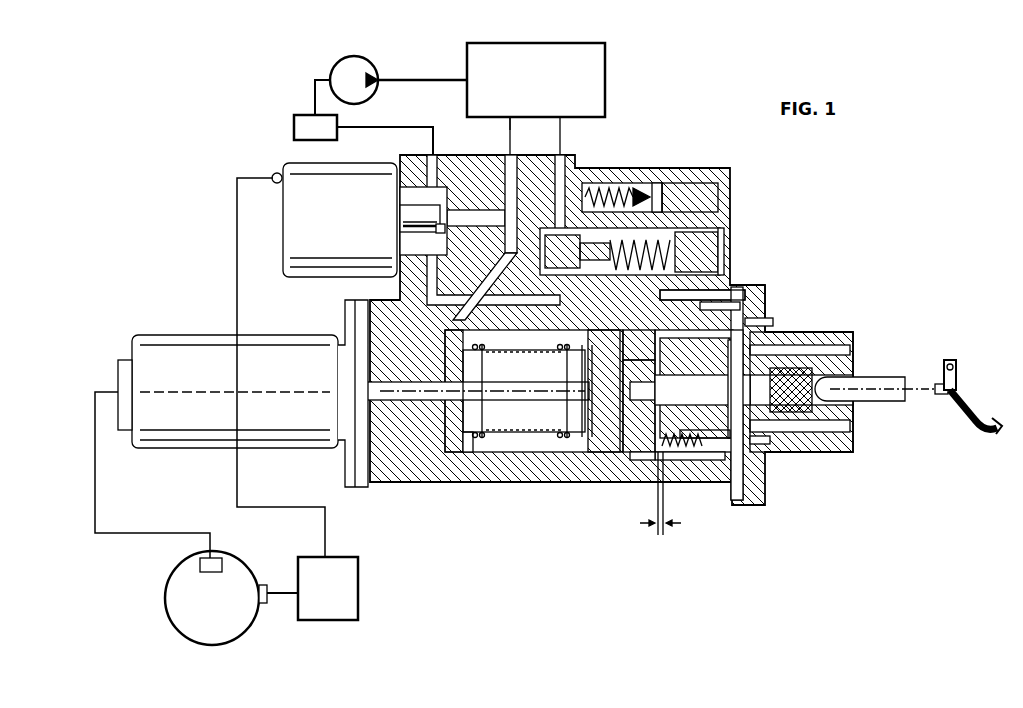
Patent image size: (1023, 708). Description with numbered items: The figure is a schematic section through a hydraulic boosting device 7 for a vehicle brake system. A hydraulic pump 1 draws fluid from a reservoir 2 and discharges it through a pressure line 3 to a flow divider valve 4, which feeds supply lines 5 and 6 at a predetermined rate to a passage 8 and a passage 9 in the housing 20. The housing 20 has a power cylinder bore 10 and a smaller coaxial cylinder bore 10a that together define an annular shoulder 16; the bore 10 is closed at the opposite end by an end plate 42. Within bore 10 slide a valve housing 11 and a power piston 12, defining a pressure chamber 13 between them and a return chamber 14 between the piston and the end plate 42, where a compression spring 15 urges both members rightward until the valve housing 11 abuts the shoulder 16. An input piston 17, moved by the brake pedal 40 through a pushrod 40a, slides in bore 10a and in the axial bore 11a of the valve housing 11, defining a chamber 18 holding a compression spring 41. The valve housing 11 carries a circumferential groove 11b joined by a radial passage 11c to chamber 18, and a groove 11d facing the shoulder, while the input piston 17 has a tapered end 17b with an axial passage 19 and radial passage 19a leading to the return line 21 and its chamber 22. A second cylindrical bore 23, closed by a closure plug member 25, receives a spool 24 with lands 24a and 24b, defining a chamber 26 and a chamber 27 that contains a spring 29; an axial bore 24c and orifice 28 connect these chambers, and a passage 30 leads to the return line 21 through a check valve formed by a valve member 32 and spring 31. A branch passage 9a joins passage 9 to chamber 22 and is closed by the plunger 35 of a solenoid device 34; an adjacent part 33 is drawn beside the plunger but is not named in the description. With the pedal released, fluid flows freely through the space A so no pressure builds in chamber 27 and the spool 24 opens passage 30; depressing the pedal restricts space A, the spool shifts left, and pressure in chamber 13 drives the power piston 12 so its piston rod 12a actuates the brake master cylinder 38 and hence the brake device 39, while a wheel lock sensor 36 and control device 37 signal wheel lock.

The hydraulic pump 1 is at (354, 57).
The reservoir 2 is at (303, 115).
The pressure line 3 is at (430, 79).
The flow divider valve 4 is at (541, 43).
The supply line 5 is at (562, 134).
The supply line 6 is at (512, 134).
The hydraulic boosting device 7 is at (768, 296).
The passage 8 is at (588, 167).
The passage 9 is at (507, 160).
The branch passage 9a is at (478, 212).
The power cylinder bore 10 is at (510, 470).
The cylinder bore 10a is at (802, 348).
The valve housing 11 is at (735, 480).
The axial bore 11a is at (670, 458).
The circumferential groove 11b is at (645, 462).
The radial passage 11c is at (722, 292).
The groove 11d is at (752, 326).
The power piston 12 is at (575, 440).
The piston rod 12a is at (492, 398).
The pressure chamber 13 is at (600, 455).
The return chamber 14 is at (457, 458).
The compression spring 15 is at (470, 438).
The annular shoulder 16 is at (765, 462).
The input piston 17 is at (795, 412).
The tapered end 17b is at (700, 440).
The chamber 18 is at (672, 455).
The axial passage 19 is at (686, 399).
The radial passage 19a is at (742, 410).
The housing 20 is at (766, 305).
The return line 21 is at (768, 286).
The chamber 22 is at (415, 186).
The second cylindrical bore 23 is at (536, 192).
The spool 24 is at (664, 252).
The land 24a is at (520, 345).
The land 24b is at (545, 345).
The axial bore 24c is at (579, 251).
The closure plug member 25 is at (722, 252).
The chamber 26 is at (540, 280).
The chamber 27 is at (690, 197).
The orifice 28 is at (542, 258).
The spring 29 is at (657, 228).
The passage 30 is at (639, 344).
The spring 31 is at (605, 185).
The valve member 32 is at (636, 188).
The armature 33 is at (438, 233).
The solenoid device 34 is at (290, 225).
The plunger 35 is at (405, 215).
The wheel lock sensor 36 is at (265, 604).
The control device 37 is at (358, 585).
The brake master cylinder 38 is at (180, 345).
The brake device 39 is at (220, 560).
The brake pedal 40 is at (962, 430).
The pushrod 40a is at (880, 380).
The compression spring 41 is at (642, 404).
The end plate 42 is at (430, 455).
The space A is at (660, 506).